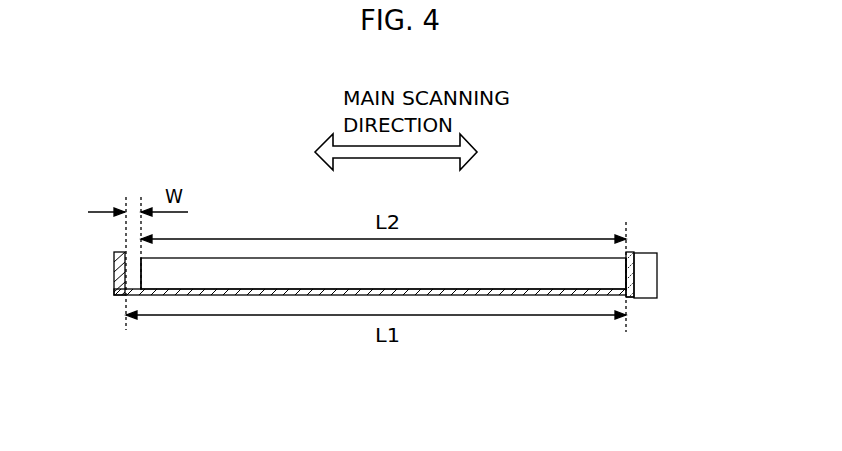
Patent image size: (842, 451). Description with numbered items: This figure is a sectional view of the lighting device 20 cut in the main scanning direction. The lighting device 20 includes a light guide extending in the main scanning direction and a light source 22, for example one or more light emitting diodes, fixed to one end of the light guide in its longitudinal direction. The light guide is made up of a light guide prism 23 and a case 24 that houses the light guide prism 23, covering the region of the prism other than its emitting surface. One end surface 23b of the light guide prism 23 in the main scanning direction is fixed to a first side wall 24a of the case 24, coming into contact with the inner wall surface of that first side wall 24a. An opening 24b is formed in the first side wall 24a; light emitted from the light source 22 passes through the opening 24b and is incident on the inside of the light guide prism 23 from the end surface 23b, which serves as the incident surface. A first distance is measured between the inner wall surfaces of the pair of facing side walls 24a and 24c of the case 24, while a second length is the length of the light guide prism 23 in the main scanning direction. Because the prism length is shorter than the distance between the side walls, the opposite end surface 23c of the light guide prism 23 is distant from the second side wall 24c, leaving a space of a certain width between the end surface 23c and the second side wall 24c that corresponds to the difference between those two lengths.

The lighting device 20 is at (375, 303).
The light source 22 is at (662, 262).
The light guide prism 23 is at (287, 273).
The end surface of the light guide prism 23b is at (623, 283).
The end surface of the light guide prism 23c is at (143, 275).
The case 24 is at (305, 293).
The first side wall 24a is at (628, 256).
The opening 24b is at (635, 275).
The second side wall 24c is at (113, 270).